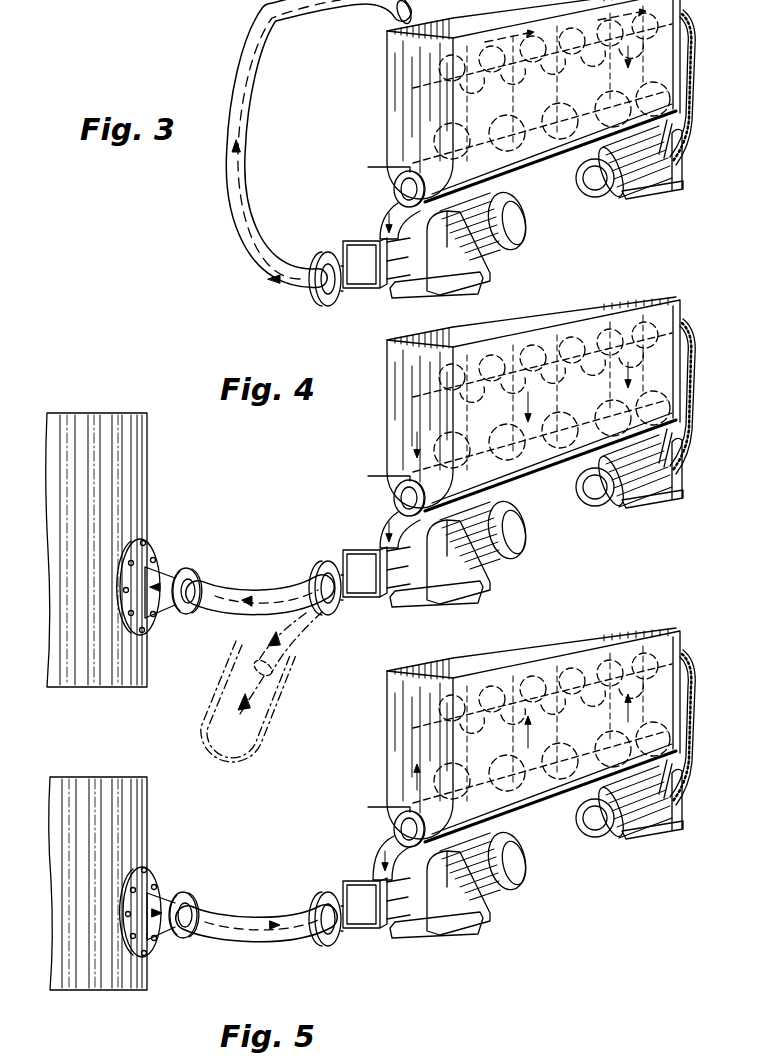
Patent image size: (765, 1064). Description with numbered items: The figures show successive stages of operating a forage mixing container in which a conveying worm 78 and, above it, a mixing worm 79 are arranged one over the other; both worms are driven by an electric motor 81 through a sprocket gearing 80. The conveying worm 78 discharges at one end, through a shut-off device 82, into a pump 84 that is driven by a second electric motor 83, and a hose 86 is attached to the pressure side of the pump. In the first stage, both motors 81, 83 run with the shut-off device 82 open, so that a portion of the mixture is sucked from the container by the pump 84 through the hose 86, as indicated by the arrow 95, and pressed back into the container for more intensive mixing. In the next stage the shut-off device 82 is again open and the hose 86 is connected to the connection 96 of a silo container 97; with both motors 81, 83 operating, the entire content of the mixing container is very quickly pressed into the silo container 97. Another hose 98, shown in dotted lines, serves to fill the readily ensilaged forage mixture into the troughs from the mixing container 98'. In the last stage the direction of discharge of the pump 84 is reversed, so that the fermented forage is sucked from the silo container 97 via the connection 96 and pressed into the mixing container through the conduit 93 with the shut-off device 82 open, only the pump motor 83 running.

In FIG. 3, the conveying worm 78 is at (548, 166).
In FIG. 4, the conveying worm 78 is at (550, 463).
In FIG. 5, the conveying worm 78 is at (549, 798).
In FIG. 3, the mixing worm 79 is at (542, 88).
In FIG. 4, the mixing worm 79 is at (589, 336).
In FIG. 5, the mixing worm 79 is at (556, 690).
In FIG. 3, the sprocket gearing 80 is at (684, 142).
In FIG. 3, the electric motor 81 is at (639, 184).
In FIG. 4, the electric motor 81 is at (640, 492).
In FIG. 5, the electric motor 81 is at (640, 826).
In FIG. 3, the shut-off device 82 is at (390, 184).
In FIG. 4, the shut-off device 82 is at (392, 494).
In FIG. 5, the shut-off device 82 is at (392, 824).
In FIG. 3, the electric motor 83 is at (494, 244).
In FIG. 4, the electric motor 83 is at (494, 558).
In FIG. 5, the electric motor 83 is at (494, 894).
In FIG. 3, the pump 84 is at (397, 287).
In FIG. 5, the pump 84 is at (394, 918).
In FIG. 3, the hose 86 is at (246, 226).
In FIG. 4, the hose 86 is at (218, 587).
In FIG. 5, the hose 86 is at (218, 917).
In FIG. 5, the conduit 93 is at (380, 860).
In FIG. 3, the arrow 95 is at (253, 113).
In FIG. 4, the connection 96 is at (183, 615).
In FIG. 5, the connection 96 is at (165, 890).
In FIG. 4, the silo container 97 is at (142, 444).
In FIG. 5, the silo container 97 is at (148, 812).
In FIG. 4, the hose 98 is at (294, 663).
In FIG. 4, the mixing container 98' is at (270, 701).